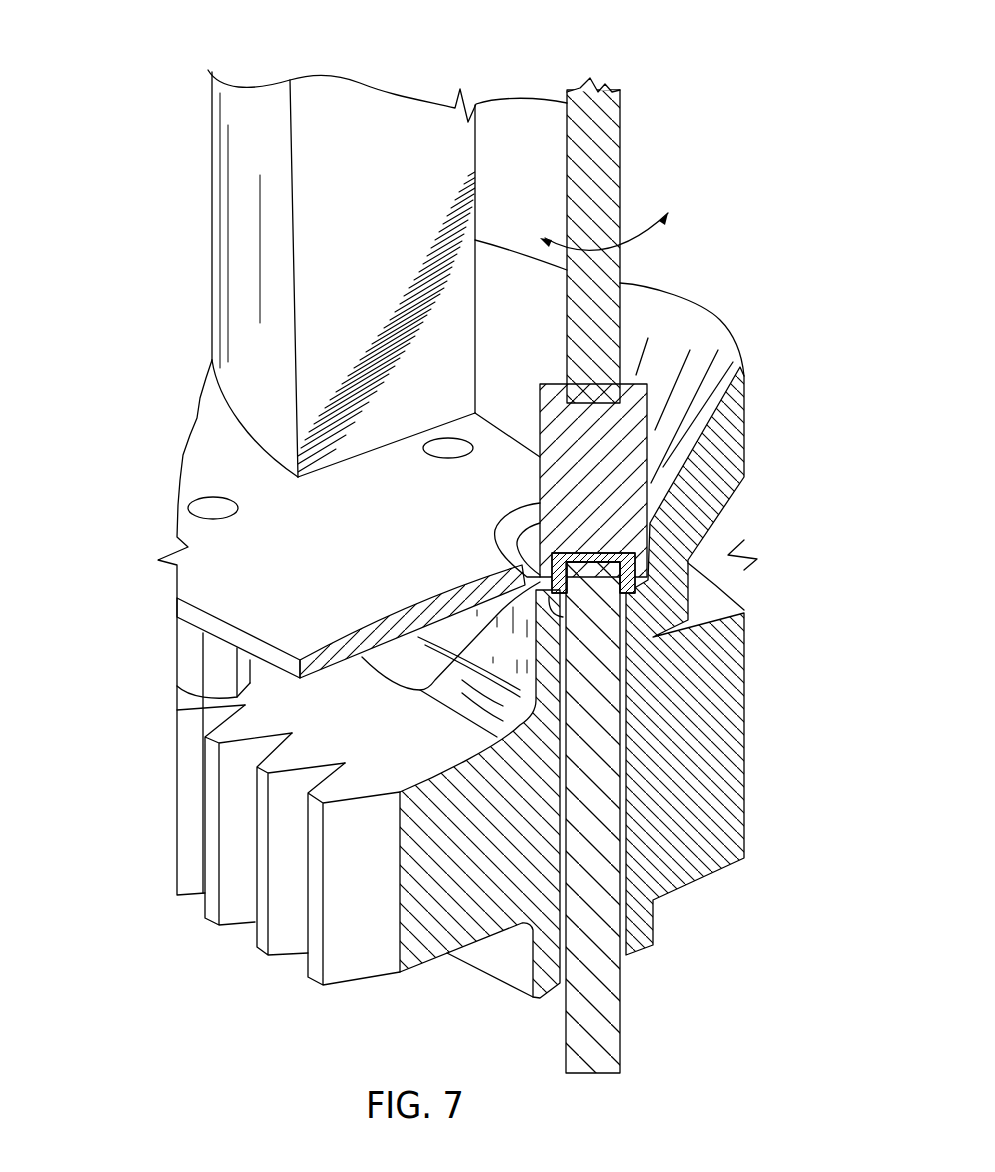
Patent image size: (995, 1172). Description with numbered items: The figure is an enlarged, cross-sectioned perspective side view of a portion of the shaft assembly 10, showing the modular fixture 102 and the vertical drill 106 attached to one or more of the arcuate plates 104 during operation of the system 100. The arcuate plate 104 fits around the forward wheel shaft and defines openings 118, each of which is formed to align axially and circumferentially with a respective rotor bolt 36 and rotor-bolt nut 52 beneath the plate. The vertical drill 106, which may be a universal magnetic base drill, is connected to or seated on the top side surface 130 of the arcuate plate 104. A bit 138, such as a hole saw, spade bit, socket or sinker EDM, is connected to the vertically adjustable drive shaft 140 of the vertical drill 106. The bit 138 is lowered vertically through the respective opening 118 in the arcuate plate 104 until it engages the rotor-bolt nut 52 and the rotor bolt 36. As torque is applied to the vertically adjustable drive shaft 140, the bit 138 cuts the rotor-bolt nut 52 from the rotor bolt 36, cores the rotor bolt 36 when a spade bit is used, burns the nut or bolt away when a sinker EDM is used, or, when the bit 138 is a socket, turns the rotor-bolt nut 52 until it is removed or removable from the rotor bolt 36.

The shaft assembly 10 is at (718, 63).
The rotor bolt 36 is at (600, 722).
The rotor-bolt nut 52 is at (417, 690).
The system 100 is at (168, 280).
The modular fixture 102 is at (232, 450).
The arcuate plate 104 is at (217, 590).
The vertical drill 106 is at (252, 168).
The opening 118 is at (500, 513).
The top side surface 130 is at (353, 559).
The bit 138 is at (649, 487).
The vertically adjustable drive shaft 140 is at (622, 190).